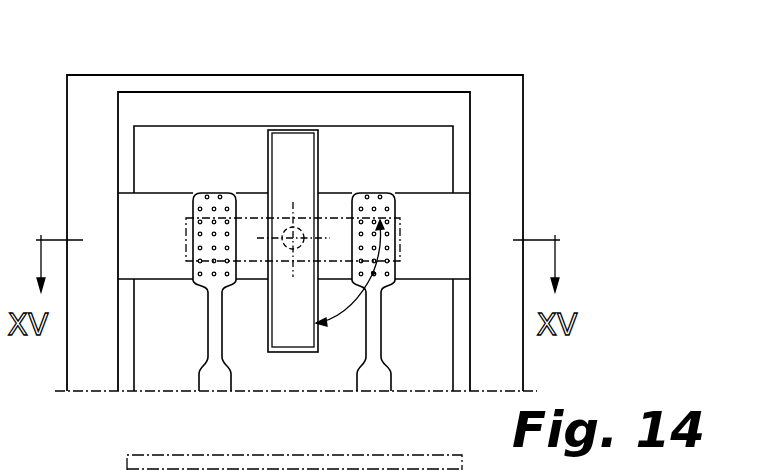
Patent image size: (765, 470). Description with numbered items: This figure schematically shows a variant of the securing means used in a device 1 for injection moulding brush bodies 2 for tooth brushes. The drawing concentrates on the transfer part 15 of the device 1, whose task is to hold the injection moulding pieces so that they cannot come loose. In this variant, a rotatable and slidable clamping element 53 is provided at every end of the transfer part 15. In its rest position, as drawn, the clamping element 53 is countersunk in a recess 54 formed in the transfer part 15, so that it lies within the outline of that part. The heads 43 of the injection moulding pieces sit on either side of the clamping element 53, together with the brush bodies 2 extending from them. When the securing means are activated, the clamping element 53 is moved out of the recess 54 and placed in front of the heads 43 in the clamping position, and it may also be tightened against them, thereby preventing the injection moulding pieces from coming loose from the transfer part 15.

The device 1 is at (570, 55).
The brush bodies 2 is at (215, 383).
The transfer part 15 is at (528, 113).
The heads 43 is at (193, 210).
The clamping element 53 is at (292, 142).
The recess 54 is at (320, 165).